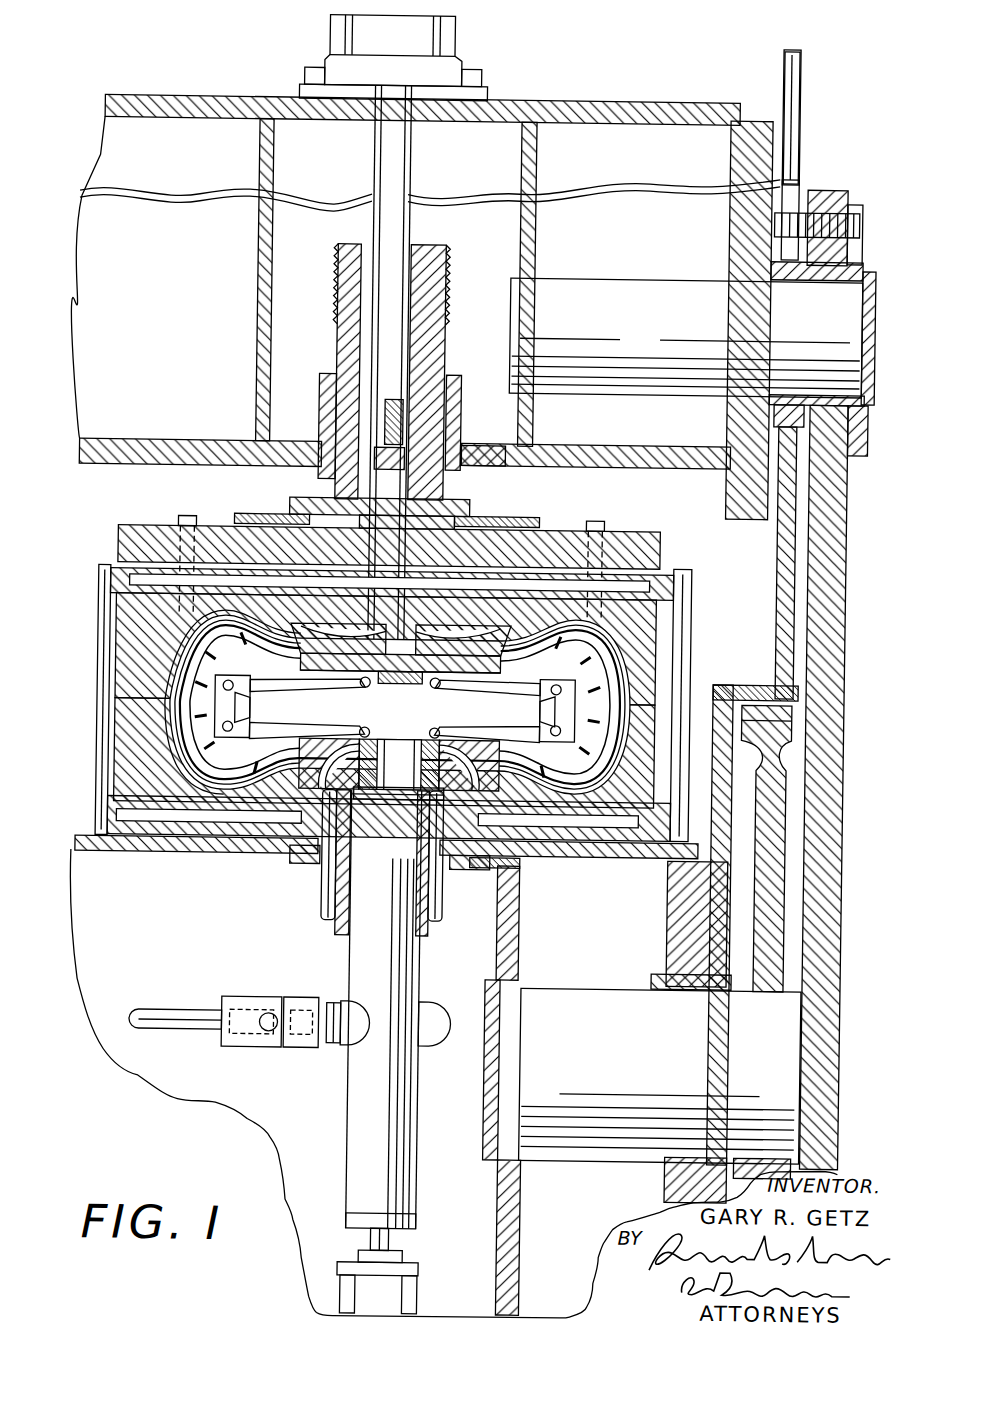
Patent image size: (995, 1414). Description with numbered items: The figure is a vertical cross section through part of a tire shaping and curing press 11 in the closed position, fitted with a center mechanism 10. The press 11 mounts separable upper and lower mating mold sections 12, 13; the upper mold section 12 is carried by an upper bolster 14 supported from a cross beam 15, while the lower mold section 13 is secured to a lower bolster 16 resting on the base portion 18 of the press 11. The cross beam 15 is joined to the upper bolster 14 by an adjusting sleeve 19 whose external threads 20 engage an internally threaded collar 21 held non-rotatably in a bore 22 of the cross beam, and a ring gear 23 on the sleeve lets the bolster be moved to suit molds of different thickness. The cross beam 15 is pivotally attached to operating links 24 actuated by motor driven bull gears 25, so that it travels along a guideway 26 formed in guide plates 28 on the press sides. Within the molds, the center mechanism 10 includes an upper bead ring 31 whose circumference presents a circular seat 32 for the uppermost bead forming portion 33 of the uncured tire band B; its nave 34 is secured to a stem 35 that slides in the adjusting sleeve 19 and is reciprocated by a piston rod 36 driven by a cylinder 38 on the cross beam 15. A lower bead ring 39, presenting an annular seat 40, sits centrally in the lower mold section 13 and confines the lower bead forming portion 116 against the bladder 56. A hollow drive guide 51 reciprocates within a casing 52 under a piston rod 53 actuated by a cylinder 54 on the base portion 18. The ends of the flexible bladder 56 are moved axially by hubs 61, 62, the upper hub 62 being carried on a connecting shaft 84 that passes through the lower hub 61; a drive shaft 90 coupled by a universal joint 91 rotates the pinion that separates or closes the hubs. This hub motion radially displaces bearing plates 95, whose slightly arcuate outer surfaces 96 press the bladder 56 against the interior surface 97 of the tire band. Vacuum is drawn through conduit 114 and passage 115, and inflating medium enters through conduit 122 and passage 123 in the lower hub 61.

The center mechanism 10 is at (585, 682).
The press 11 is at (809, 85).
The upper mold section 12 is at (624, 628).
The lower mold section 13 is at (626, 771).
The upper bolster 14 is at (625, 530).
The cross beam 15 is at (589, 97).
The lower bolster 16 is at (173, 858).
The base portion 18 is at (672, 946).
The adjusting sleeve 19 is at (332, 291).
The threads 20 is at (442, 255).
The internally threaded collar 21 is at (457, 410).
The bore 22 is at (322, 435).
The ring gear 23 is at (502, 517).
The operating links 24 is at (846, 548).
The bull gears 25 is at (772, 825).
The guideway 26 is at (792, 141).
The guide plates 28 is at (775, 547).
The upper bead ring 31 is at (300, 663).
The circular seat 32 is at (459, 633).
The uppermost bead forming portion 33 is at (480, 673).
The nave 34 is at (333, 634).
The stem 35 is at (309, 510).
The piston rod 36 is at (367, 218).
The cylinder 38 is at (312, 41).
The lower bead ring 39 is at (306, 774).
The annular seat 40 is at (491, 860).
The drive guide 51 is at (355, 1103).
The casing 52 is at (349, 931).
The piston rod 53 is at (398, 1241).
The cylinder 54 is at (426, 1296).
The bladder 56 is at (238, 840).
The lower hub 61 is at (498, 733).
The upper hub 62 is at (312, 681).
The connecting shaft 84 is at (387, 792).
The drive shaft 90 is at (176, 1018).
The universal joint 91 is at (274, 996).
The bearing plates 95 is at (194, 685).
The outer surface 96 is at (619, 720).
The interior surface 97 is at (214, 670).
The conduit 114 is at (324, 893).
The passage 115 is at (348, 720).
The lower bead forming portion 116 is at (558, 845).
The conduit 122 is at (445, 898).
The passage 123 is at (445, 704).
The uncured tire band B is at (176, 743).